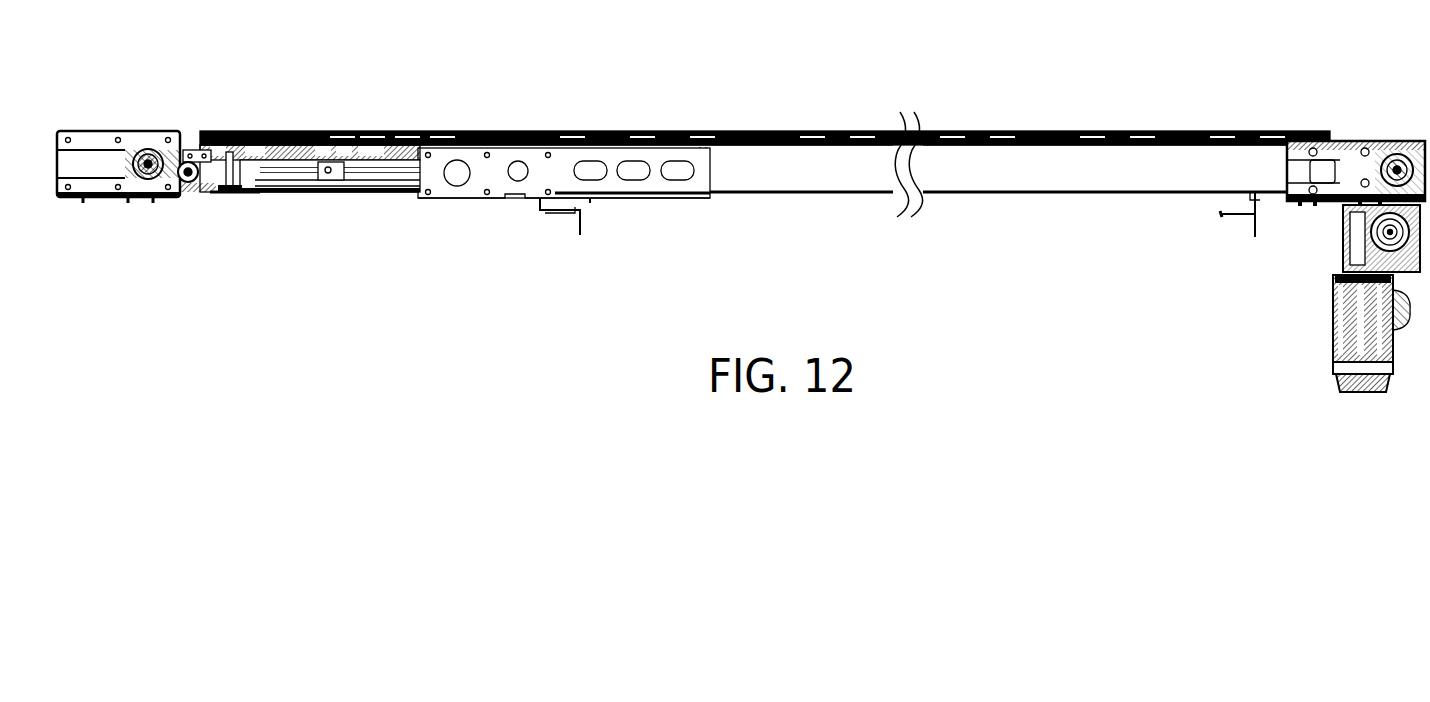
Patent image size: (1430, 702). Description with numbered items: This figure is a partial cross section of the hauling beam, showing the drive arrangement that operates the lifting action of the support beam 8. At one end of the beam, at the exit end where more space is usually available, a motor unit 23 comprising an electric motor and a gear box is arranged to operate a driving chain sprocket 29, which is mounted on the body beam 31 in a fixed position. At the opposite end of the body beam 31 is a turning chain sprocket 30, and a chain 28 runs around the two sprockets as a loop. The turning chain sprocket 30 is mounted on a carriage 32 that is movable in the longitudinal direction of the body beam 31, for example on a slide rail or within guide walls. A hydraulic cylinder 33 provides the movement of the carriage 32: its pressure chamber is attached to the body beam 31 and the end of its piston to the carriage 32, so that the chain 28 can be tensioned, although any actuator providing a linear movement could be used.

The support beam 8 is at (774, 131).
The motor unit 23 is at (1330, 333).
The chain 28 is at (390, 148).
The driving chain sprocket 29 is at (1400, 140).
The turning chain sprocket 30 is at (125, 197).
The body beam 31 is at (380, 186).
The carriage 32 is at (178, 197).
The hydraulic cylinder 33 is at (258, 196).